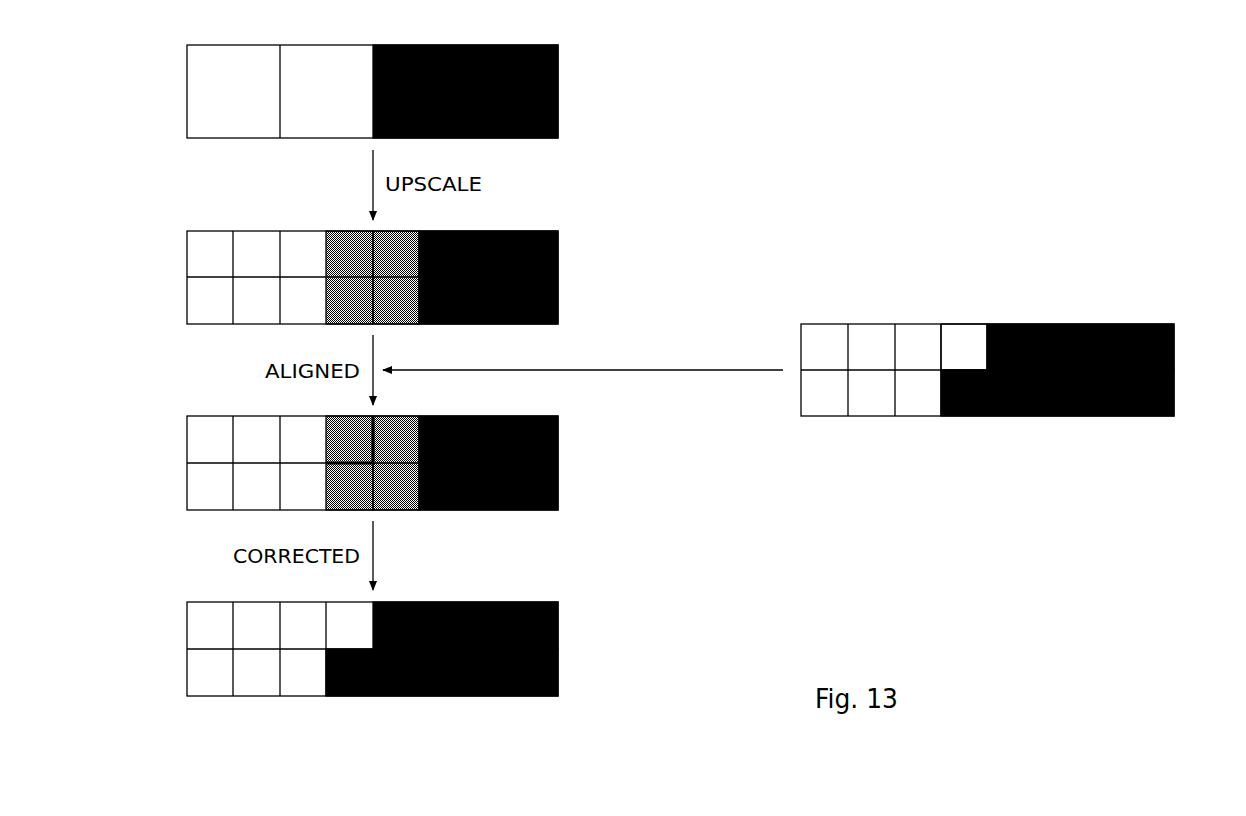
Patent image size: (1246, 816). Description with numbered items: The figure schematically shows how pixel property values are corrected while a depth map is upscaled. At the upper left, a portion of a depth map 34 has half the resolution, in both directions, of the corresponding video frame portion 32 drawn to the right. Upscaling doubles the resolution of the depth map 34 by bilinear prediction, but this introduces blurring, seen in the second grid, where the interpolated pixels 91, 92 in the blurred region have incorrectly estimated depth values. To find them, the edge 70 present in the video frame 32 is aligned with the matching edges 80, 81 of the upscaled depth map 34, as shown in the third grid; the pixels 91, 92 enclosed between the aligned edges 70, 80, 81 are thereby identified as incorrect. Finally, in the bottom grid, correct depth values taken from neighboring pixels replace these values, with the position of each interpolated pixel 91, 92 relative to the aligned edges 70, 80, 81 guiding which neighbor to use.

The video frame portion 32 is at (1166, 362).
The depth map 34 is at (179, 88).
The edge 70 is at (365, 430).
The matching edge 80 is at (318, 245).
The matching edge 81 is at (411, 245).
The interpolated pixel 91 is at (342, 316).
The interpolated pixel 92 is at (387, 316).